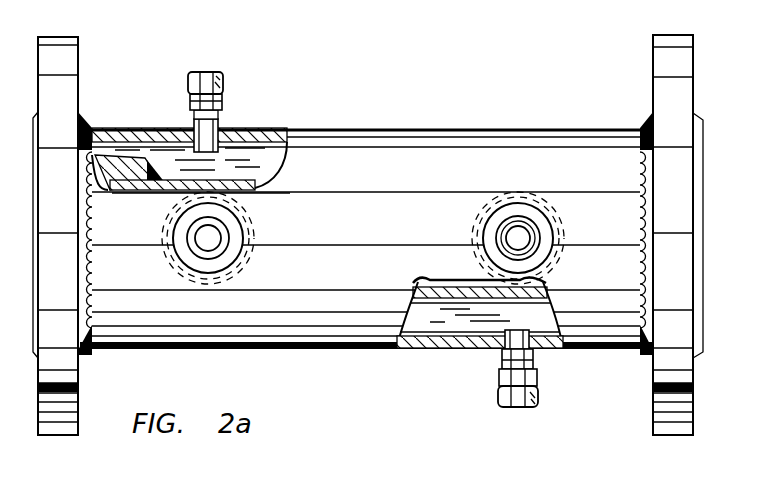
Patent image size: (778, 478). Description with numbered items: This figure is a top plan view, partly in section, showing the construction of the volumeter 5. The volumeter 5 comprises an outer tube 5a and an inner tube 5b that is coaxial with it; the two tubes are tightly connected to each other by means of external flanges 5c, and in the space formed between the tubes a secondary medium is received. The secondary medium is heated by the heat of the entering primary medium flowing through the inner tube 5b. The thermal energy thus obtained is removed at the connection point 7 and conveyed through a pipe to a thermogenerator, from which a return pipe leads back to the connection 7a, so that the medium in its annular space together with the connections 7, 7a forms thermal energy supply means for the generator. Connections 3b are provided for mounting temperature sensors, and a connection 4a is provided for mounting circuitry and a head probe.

The connections 3b is at (238, 246).
The connection 4a is at (537, 218).
The volumeter 5 is at (365, 211).
The outer tube 5a is at (470, 135).
The inner tube 5b is at (243, 160).
The external flanges 5c is at (70, 68).
The connection point 7 is at (250, 68).
The connection 7a is at (540, 398).